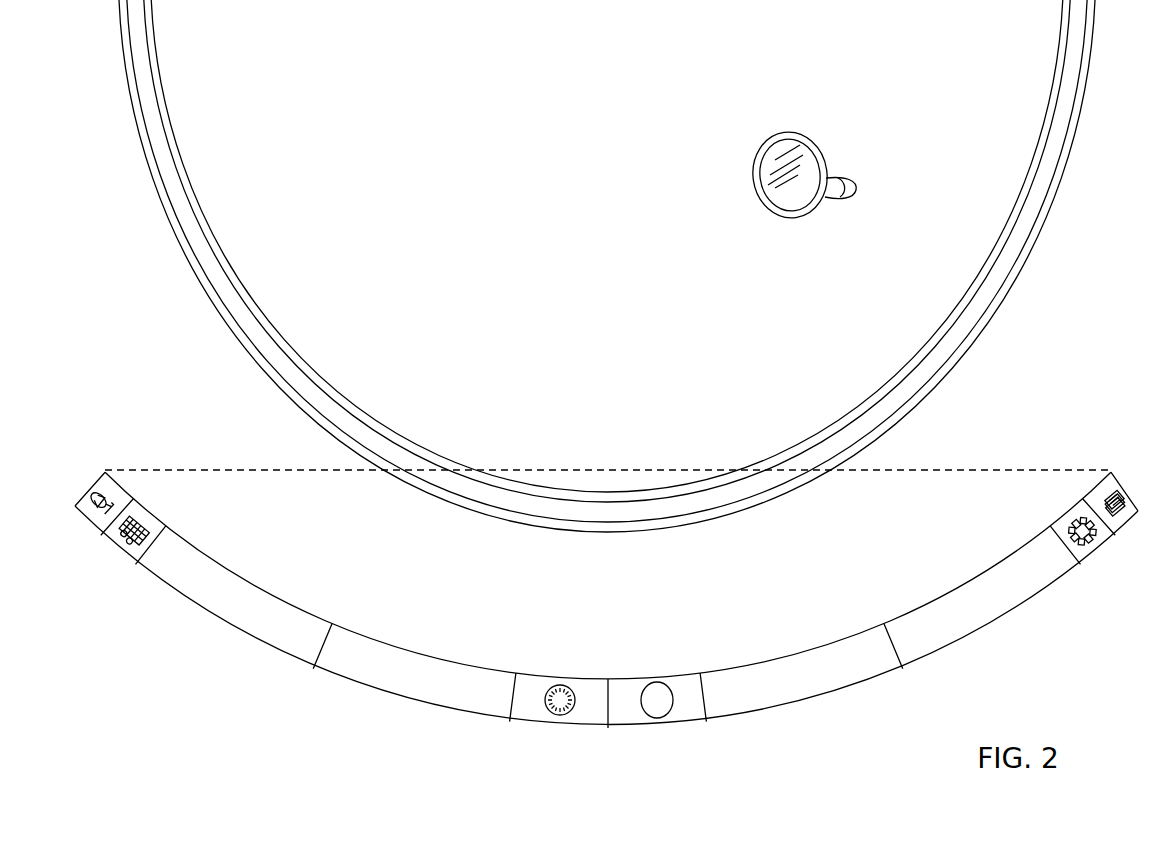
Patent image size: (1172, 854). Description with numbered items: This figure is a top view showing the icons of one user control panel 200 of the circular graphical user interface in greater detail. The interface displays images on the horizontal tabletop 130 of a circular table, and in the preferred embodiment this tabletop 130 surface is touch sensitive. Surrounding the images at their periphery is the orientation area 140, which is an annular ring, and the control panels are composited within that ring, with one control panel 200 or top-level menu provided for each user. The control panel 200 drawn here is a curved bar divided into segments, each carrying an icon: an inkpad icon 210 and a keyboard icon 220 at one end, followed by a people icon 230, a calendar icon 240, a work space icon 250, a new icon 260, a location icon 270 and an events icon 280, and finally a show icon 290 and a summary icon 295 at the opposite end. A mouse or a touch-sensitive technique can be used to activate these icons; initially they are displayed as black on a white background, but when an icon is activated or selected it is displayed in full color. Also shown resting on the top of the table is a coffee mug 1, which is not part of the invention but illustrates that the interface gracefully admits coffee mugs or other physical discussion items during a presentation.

The coffee mug 1 is at (830, 135).
The tabletop 130 is at (962, 201).
The orientation area 140 is at (158, 132).
The control panel 200 is at (622, 533).
The inkpad icon 210 is at (107, 541).
The keyboard icon 220 is at (133, 563).
The people icon 230 is at (242, 635).
The calendar icon 240 is at (407, 702).
The work space icon 250 is at (562, 727).
The new icon 260 is at (660, 727).
The location icon 270 is at (798, 704).
The events icon 280 is at (985, 626).
The show icon 290 is at (1088, 552).
The summary icon 295 is at (1117, 532).